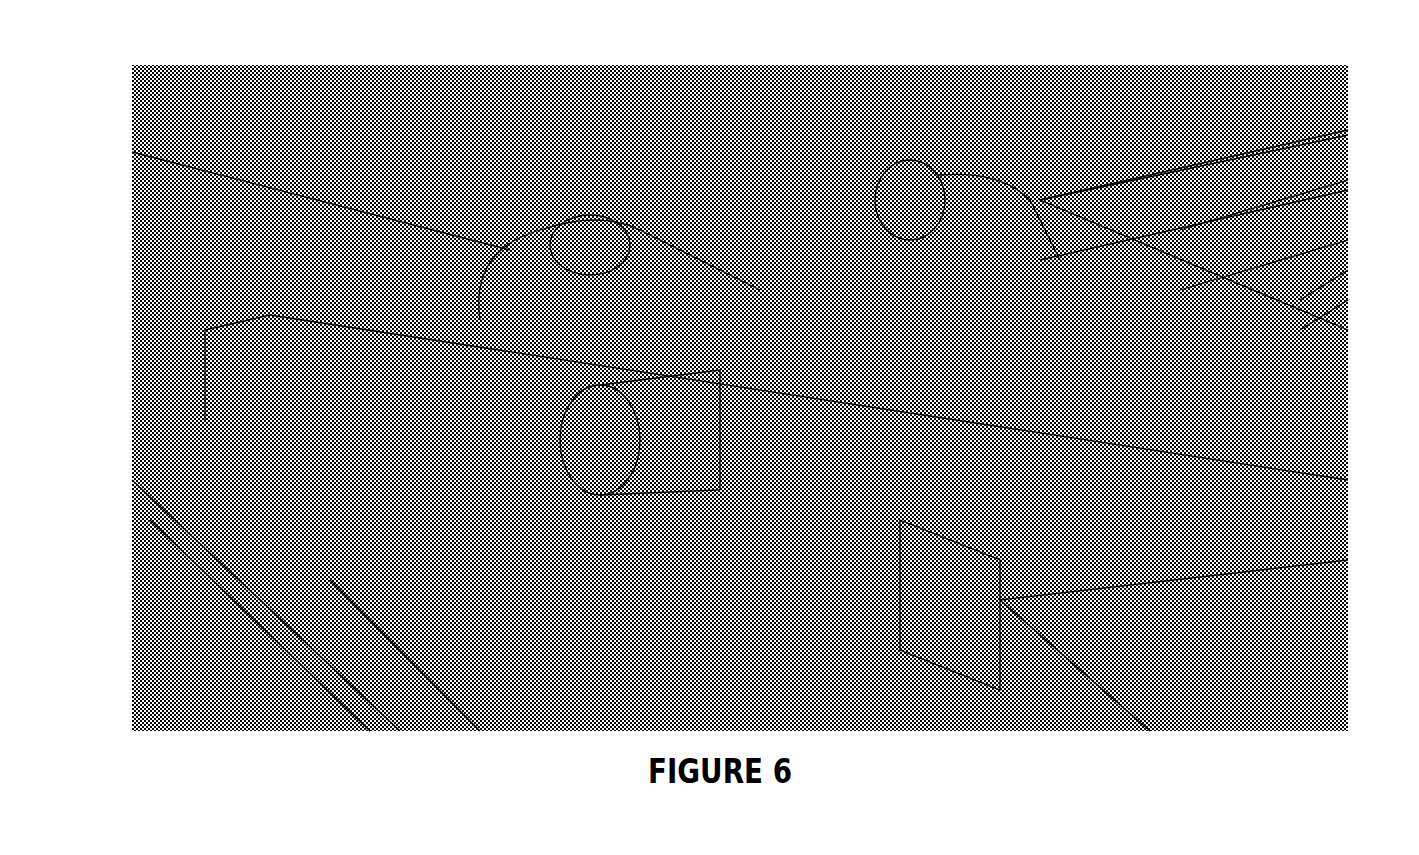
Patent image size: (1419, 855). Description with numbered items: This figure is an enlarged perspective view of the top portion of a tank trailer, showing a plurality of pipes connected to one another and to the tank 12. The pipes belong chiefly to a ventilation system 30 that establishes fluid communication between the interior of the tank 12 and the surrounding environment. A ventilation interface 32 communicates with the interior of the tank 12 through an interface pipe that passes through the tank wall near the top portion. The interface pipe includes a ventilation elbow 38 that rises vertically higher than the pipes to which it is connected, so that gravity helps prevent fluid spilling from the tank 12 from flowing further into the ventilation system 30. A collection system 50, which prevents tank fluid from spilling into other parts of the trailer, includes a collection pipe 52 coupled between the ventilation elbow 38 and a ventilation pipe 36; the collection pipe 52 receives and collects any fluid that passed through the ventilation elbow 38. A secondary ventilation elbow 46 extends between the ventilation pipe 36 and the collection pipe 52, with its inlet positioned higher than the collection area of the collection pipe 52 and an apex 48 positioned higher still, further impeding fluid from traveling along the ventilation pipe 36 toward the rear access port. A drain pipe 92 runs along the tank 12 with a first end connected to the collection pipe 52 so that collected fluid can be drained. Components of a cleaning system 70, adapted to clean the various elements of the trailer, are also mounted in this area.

The tank 12 is at (1347, 590).
The ventilation system 30 is at (1060, 175).
The ventilation interface 32 is at (240, 700).
The ventilation pipe 36 is at (1210, 210).
The ventilation elbow 38 is at (510, 250).
The secondary ventilation elbow 46 is at (960, 175).
The apex 48 is at (900, 135).
The collection system 50 is at (430, 700).
The collection pipe 52 is at (665, 480).
The cleaning system 70 is at (960, 690).
The drain pipe 92 is at (1340, 322).